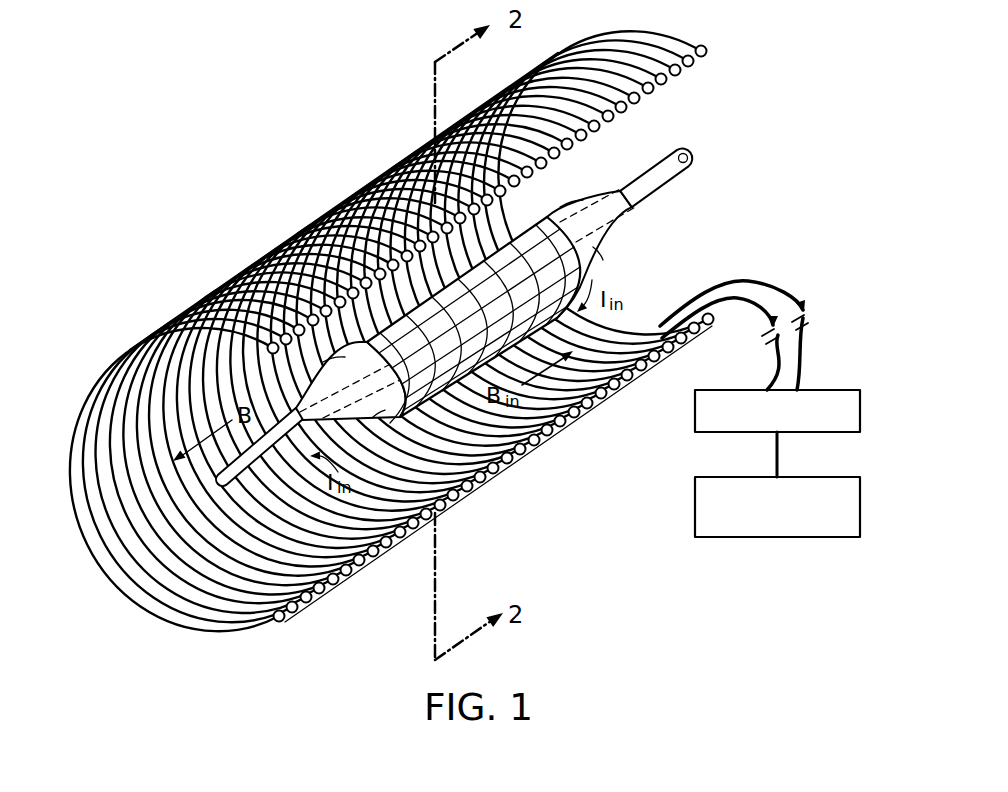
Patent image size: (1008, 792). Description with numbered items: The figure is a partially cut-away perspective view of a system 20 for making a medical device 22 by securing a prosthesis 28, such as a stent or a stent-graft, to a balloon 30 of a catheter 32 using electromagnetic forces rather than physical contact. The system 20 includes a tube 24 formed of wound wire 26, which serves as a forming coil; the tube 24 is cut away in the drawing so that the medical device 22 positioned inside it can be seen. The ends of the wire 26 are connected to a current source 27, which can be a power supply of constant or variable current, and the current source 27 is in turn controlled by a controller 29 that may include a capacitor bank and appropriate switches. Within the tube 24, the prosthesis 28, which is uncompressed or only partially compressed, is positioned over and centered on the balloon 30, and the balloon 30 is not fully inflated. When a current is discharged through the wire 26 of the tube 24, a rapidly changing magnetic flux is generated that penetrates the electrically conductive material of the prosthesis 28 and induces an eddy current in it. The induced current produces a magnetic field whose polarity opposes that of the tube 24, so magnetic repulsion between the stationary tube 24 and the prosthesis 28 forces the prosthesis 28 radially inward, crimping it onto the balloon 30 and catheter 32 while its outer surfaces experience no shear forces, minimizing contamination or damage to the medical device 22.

The system 20 is at (188, 229).
The medical device 22 is at (675, 229).
The tube 24 is at (213, 628).
The wire 26 is at (712, 59).
The current source 27 is at (768, 539).
The prosthesis 28 is at (514, 455).
The controller 29 is at (824, 390).
The balloon 30 is at (461, 493).
The catheter 32 is at (686, 160).